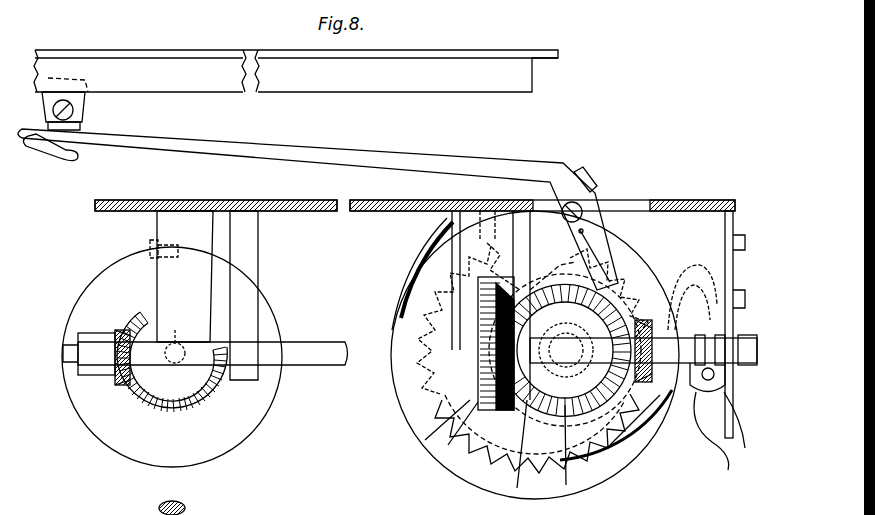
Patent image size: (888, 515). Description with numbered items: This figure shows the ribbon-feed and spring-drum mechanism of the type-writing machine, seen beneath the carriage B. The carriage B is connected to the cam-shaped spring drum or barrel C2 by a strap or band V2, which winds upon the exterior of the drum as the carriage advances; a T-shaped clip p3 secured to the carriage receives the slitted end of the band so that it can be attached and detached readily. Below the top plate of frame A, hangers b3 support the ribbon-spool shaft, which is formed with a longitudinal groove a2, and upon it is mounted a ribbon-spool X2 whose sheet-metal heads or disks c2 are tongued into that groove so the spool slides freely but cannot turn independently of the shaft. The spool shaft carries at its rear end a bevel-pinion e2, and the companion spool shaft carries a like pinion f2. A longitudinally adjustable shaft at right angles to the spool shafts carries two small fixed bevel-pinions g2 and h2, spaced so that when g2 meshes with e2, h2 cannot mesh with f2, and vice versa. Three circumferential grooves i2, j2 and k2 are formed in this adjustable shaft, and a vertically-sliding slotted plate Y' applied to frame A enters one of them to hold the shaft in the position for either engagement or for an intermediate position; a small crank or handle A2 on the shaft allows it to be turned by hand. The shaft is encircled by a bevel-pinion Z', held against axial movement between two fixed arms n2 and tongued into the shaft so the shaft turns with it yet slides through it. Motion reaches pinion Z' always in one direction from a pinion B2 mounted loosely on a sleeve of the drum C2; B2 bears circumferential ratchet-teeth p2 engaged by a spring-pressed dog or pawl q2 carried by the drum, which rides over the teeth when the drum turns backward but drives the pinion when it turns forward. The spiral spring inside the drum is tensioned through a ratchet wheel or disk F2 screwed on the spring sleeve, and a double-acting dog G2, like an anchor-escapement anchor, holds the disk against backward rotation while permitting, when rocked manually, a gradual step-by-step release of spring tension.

The carriage B is at (296, 86).
The hanger b3 is at (115, 183).
The T-shaped clip p3 is at (48, 156).
The strap or band V2 is at (318, 209).
The spring-pressed dog or pawl q2 is at (597, 268).
The frame A is at (318, 198).
The heads or disks c2 is at (172, 357).
The ribbon-spool X2 is at (242, 413).
The bevel-pinion g2 is at (120, 384).
The bevel-pinion e2 is at (154, 406).
The longitudinal groove a2 is at (196, 499).
The cam-shaped drum or barrel C2 is at (490, 194).
The ratchet wheel or disk F2 is at (470, 400).
The fixed arms n2 is at (462, 370).
The bevel-pinion Z' is at (443, 435).
The bevel-pinion h2 is at (640, 324).
The shaft W is at (643, 350).
The bevel-pinion f2 is at (576, 378).
The pinion B2 is at (620, 425).
The circumferential ratchet-teeth p2 is at (640, 400).
The circumferential groove k2 is at (728, 378).
The circumferential groove i2 is at (702, 339).
The circumferential groove j2 is at (720, 339).
The crank or handle A2 is at (757, 352).
The vertically-sliding plate Y' is at (724, 431).
The double-acting dog G2 is at (690, 432).